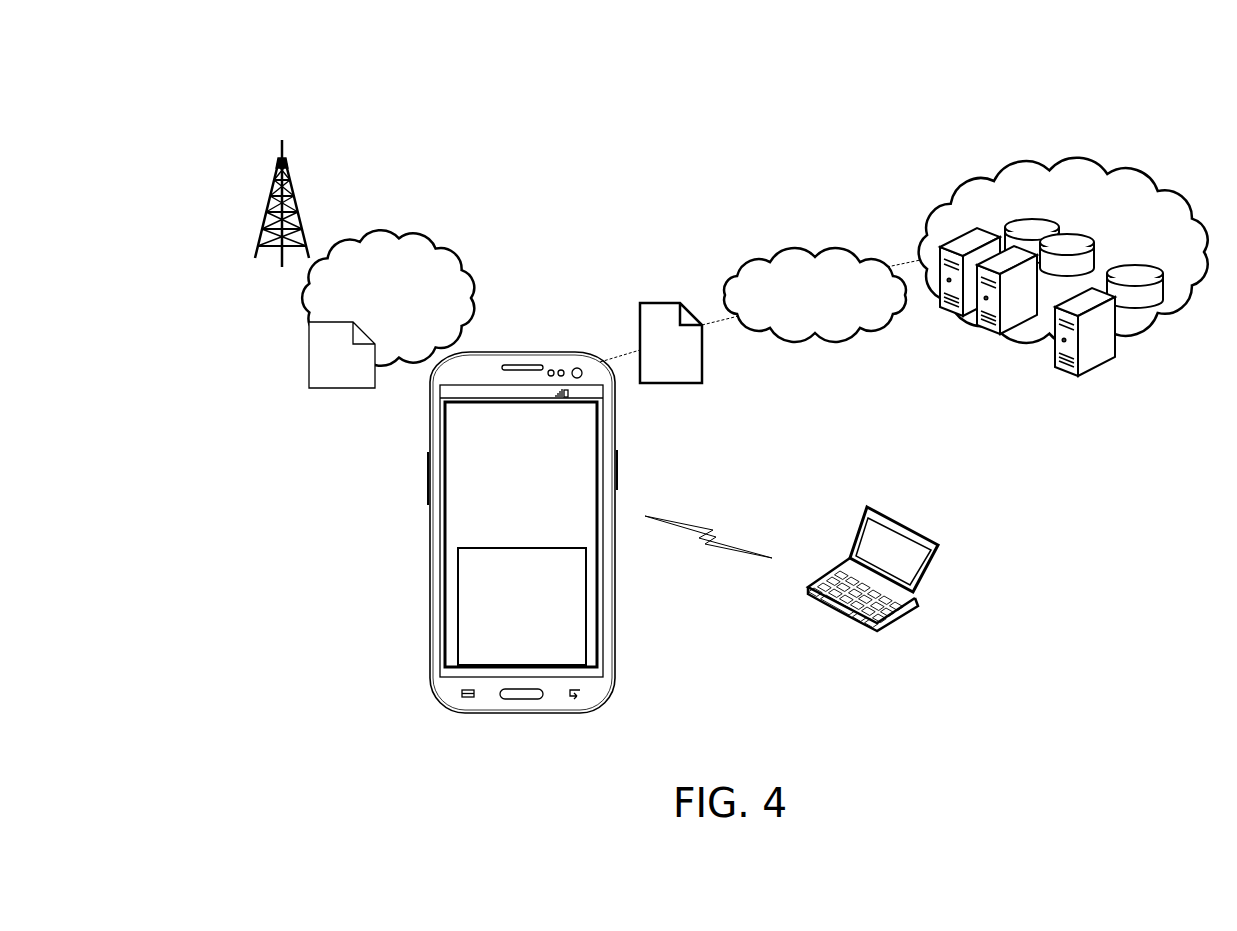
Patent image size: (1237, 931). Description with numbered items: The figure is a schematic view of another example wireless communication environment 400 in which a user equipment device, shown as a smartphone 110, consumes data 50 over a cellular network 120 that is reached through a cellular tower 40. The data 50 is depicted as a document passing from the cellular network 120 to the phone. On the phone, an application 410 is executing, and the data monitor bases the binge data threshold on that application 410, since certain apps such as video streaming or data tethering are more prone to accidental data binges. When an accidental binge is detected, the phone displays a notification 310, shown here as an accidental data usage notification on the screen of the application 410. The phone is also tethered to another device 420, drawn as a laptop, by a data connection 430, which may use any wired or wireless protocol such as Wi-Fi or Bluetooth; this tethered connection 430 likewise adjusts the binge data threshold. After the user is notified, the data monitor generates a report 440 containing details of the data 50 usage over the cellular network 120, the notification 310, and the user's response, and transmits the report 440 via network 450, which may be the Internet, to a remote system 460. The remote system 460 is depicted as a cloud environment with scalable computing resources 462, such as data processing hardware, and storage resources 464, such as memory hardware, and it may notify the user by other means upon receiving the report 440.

The wireless communication environment 400 is at (893, 73).
The cellular tower 40 is at (277, 170).
The cellular network 120 is at (410, 253).
The data 50 is at (309, 355).
The mobile device 110 is at (545, 352).
The application 410 is at (446, 443).
The notification 310 is at (510, 548).
The report 440 is at (658, 305).
The network 450 is at (737, 280).
The remote system 460 is at (1063, 267).
The computing resources 462 is at (1092, 352).
The storage resources 464 is at (1136, 266).
The data connection 430 is at (713, 531).
The another device 420 is at (918, 528).